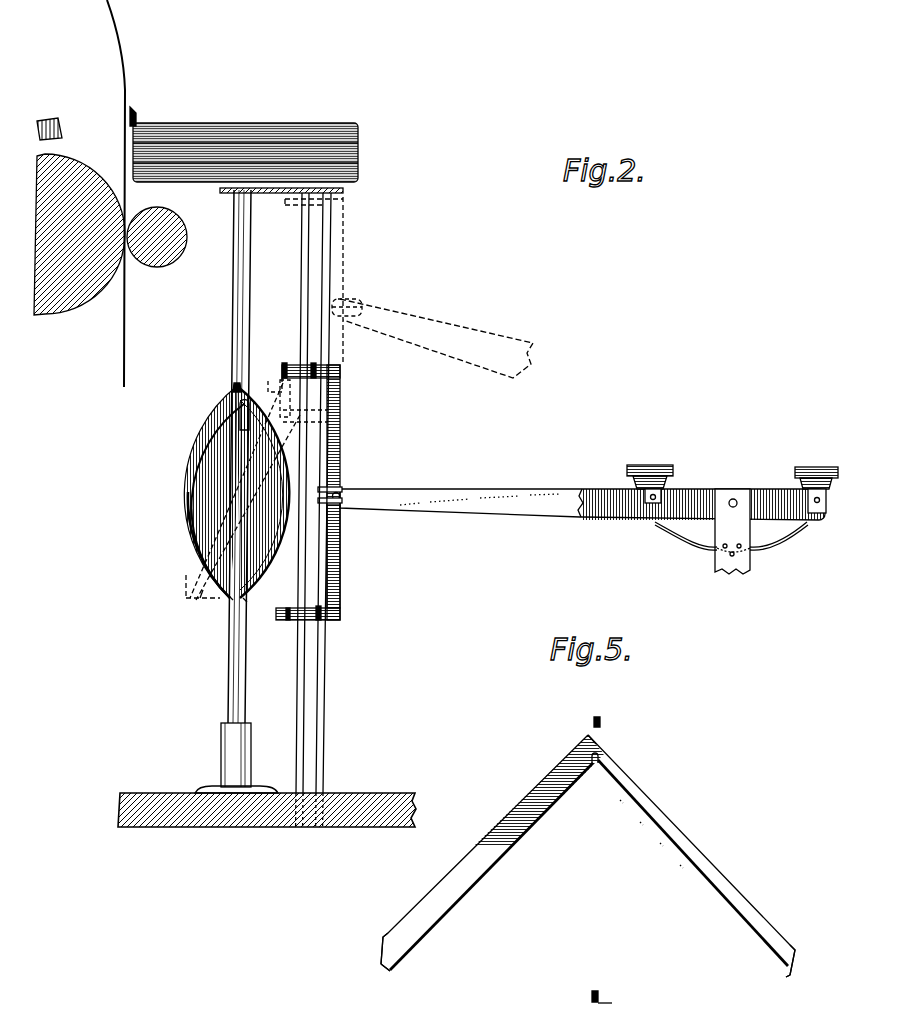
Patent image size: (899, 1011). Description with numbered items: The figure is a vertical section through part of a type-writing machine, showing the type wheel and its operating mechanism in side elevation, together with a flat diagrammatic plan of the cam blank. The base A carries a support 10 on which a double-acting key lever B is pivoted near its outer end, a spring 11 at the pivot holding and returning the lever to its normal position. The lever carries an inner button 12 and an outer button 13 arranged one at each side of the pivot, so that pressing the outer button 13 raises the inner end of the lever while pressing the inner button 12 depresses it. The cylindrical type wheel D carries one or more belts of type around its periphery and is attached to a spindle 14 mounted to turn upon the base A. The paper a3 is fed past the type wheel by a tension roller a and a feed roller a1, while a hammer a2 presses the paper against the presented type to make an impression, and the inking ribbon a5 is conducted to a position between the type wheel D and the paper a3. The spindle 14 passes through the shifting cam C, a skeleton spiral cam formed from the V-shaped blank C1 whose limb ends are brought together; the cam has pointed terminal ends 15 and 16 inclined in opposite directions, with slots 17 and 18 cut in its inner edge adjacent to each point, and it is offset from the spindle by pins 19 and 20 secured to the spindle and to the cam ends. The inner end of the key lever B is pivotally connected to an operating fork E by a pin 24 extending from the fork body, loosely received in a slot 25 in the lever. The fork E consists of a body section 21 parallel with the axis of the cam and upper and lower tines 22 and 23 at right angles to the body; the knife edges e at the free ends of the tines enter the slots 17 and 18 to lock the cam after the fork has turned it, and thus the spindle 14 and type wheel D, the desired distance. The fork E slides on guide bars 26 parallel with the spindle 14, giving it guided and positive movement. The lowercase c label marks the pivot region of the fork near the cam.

In FIG. 2, the tension roller a is at (174, 260).
In FIG. 2, the feed roller a1 is at (57, 306).
In FIG. 2, the hammer a2 is at (63, 128).
In FIG. 2, the paper a3 is at (128, 82).
In FIG. 2, the inking ribbon a5 is at (134, 118).
In FIG. 2, the base A is at (386, 793).
In FIG. 2, the key lever B is at (478, 338).
In FIG. 2, the shifting cam C is at (188, 502).
In FIG. 5, the blank of the shifting cam C1 is at (588, 856).
In FIG. 2, the type wheel D is at (358, 149).
In FIG. 2, the operating fork E is at (345, 207).
In FIG. 2, the pivot slot c is at (298, 379).
In FIG. 2, the inner edge of tine e is at (289, 609).
In FIG. 5, the inner edge of tine e is at (588, 735).
In FIG. 2, the support 10 is at (750, 562).
In FIG. 2, the spring 11 is at (704, 542).
In FIG. 2, the inner button 12 is at (654, 470).
In FIG. 2, the outer button 13 is at (818, 468).
In FIG. 2, the spindle 14 is at (254, 343).
In FIG. 2, the pointed terminal end 15 is at (236, 387).
In FIG. 5, the pointed terminal end 15 is at (591, 738).
In FIG. 2, the pointed terminal end 16 is at (245, 600).
In FIG. 5, the pointed terminal end 16 is at (395, 975).
In FIG. 2, the slot 17 is at (239, 411).
In FIG. 5, the slot 17 is at (600, 760).
In FIG. 2, the slot 18 is at (231, 597).
In FIG. 5, the slot 18 is at (385, 946).
In FIG. 2, the pin 19 is at (267, 388).
In FIG. 2, the pin 20 is at (203, 594).
In FIG. 2, the body section 21 is at (340, 553).
In FIG. 2, the upper tine 22 is at (317, 367).
In FIG. 5, the upper tine 22 is at (599, 715).
In FIG. 2, the lower tine 23 is at (322, 622).
In FIG. 5, the lower tine 23 is at (618, 1002).
In FIG. 2, the pin 24 is at (337, 504).
In FIG. 2, the slot 25 is at (340, 486).
In FIG. 2, the guide bar 26 is at (303, 243).